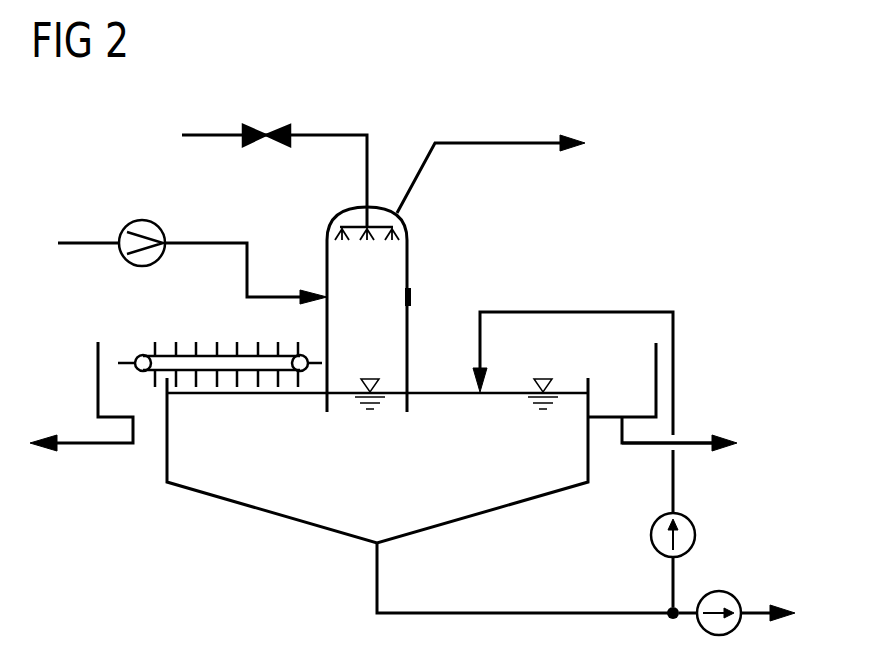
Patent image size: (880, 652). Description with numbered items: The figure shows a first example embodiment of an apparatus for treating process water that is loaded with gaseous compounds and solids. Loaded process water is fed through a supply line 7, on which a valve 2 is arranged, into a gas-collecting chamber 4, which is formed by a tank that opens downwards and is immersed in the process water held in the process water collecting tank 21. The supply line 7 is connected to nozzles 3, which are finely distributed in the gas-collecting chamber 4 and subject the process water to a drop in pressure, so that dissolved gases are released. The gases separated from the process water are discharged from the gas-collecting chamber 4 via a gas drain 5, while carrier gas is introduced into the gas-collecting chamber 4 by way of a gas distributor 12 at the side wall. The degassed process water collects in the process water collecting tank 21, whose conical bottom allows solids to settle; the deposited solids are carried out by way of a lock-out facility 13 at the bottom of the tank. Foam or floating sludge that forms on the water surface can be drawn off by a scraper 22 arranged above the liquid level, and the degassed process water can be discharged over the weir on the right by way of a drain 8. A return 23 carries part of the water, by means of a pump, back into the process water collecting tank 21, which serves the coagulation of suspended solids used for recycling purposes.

The valve 2 is at (252, 123).
The nozzle 3 is at (402, 230).
The gas-collecting chamber 4 is at (393, 266).
The gas drain 5 is at (505, 142).
The supply line 7 is at (341, 132).
The drain 8 is at (642, 445).
The gas distributor 12 is at (326, 293).
The lock-out facility 13 is at (378, 563).
The process water collecting tank 21 is at (247, 503).
The scraper 22 is at (143, 353).
The return 23 is at (673, 477).